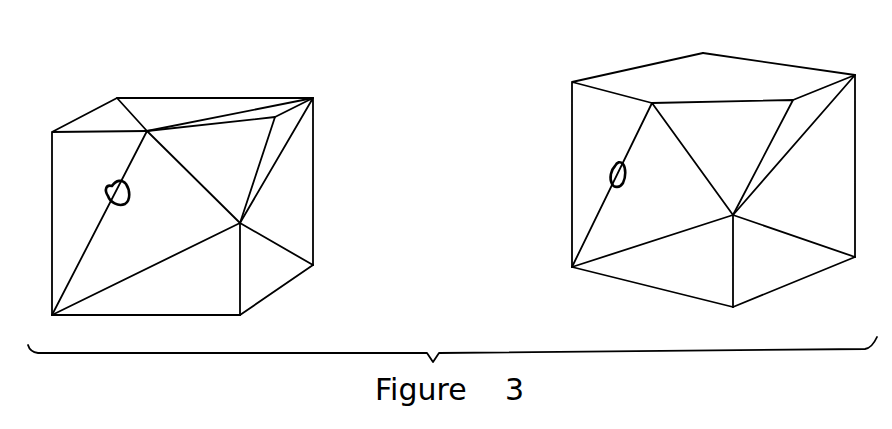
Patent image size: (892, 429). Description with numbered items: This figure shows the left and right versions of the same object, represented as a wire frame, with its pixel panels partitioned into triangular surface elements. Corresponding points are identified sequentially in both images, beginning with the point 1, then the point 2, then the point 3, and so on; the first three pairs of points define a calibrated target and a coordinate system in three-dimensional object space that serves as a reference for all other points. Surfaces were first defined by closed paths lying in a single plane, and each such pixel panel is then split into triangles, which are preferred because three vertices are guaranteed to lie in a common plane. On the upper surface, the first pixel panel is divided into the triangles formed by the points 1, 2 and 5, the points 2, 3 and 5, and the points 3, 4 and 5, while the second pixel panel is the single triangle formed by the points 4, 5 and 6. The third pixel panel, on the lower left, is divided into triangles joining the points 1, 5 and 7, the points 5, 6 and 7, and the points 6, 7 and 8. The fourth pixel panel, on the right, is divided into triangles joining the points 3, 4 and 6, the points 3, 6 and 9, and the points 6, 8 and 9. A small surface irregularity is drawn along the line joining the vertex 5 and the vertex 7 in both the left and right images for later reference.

The point 1 is at (365, 184).
The point 2 is at (478, 76).
The point 3 is at (558, 164).
The point 4 is at (475, 161).
The point 5 is at (392, 206).
The point 6 is at (407, 258).
The point 7 is at (387, 303).
The point 8 is at (547, 298).
The point 9 is at (554, 249).